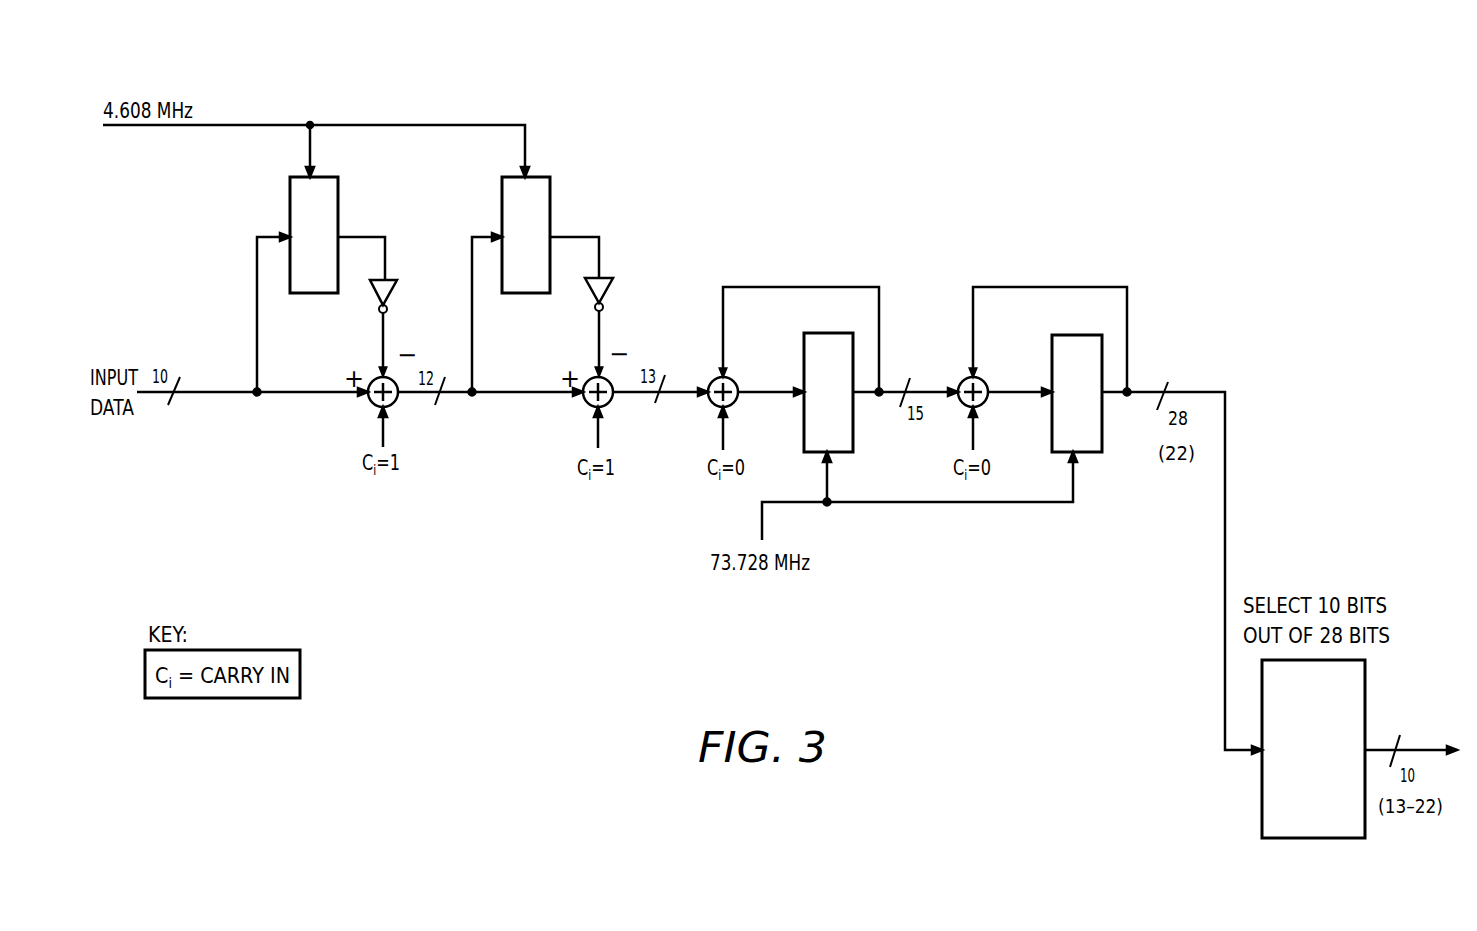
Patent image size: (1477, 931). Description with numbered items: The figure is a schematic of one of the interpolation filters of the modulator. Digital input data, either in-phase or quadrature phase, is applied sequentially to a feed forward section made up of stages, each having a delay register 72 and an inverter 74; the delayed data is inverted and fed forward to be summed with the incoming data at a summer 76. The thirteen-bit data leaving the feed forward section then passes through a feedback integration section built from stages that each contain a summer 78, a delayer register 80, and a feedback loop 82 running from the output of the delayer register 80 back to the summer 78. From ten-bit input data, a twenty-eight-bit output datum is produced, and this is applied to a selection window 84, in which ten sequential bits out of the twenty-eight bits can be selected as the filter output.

The delay register 72 is at (338, 195).
The inverter 74 is at (393, 277).
The summer 76 is at (372, 403).
The summer 78 is at (712, 404).
The delayer register 80 is at (813, 333).
The feedback path 82 is at (850, 287).
The selection window 84 is at (1262, 798).